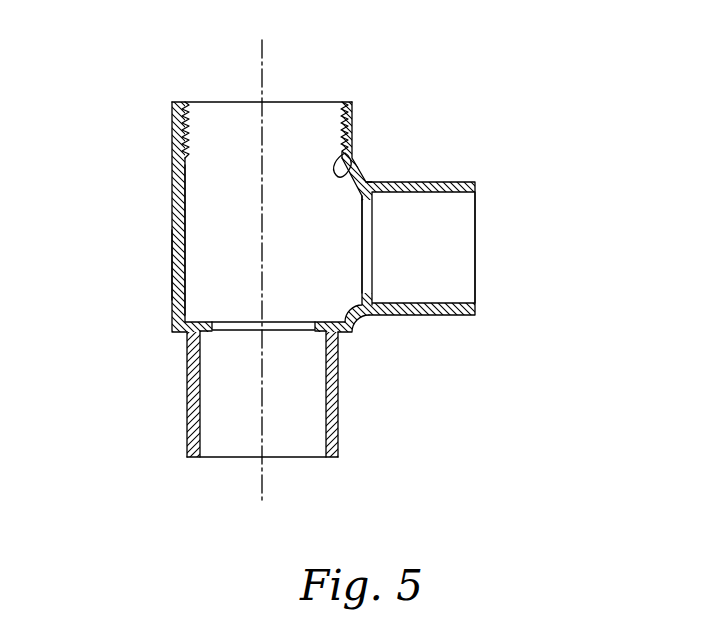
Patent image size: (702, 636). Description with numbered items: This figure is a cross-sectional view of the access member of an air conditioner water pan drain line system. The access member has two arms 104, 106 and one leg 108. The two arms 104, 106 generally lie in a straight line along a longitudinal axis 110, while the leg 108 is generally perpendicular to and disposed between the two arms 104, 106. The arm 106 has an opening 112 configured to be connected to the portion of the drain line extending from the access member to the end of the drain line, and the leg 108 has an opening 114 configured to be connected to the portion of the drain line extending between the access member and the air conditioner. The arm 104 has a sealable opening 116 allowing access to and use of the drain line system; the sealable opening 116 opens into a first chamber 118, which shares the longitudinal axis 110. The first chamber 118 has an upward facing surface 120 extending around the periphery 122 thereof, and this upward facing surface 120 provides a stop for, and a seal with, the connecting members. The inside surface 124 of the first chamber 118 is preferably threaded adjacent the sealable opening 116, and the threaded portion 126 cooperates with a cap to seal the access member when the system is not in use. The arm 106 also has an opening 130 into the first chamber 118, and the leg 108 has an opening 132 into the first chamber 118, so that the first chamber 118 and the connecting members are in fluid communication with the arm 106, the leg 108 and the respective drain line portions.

The arm 104 is at (357, 118).
The arm 106 is at (340, 405).
The leg 108 is at (452, 181).
The longitudinal axis 110 is at (262, 55).
The opening 112 is at (226, 457).
The opening 114 is at (458, 270).
The sealable opening 116 is at (220, 100).
The first chamber 118 is at (193, 212).
The upward facing surface 120 is at (203, 323).
The periphery 122 is at (188, 272).
The inside surface 124 is at (350, 156).
The threaded portion 126 is at (343, 141).
The opening 130 is at (300, 333).
The opening 132 is at (365, 227).